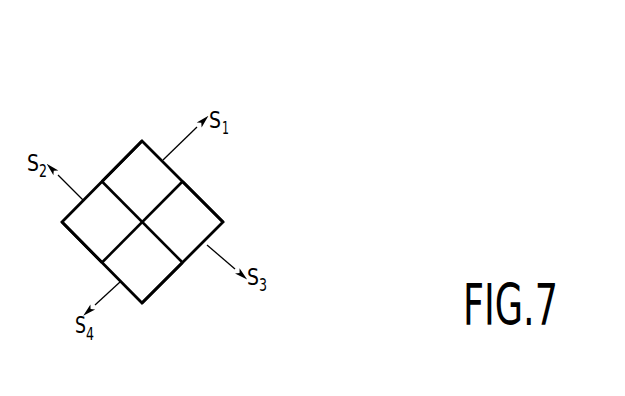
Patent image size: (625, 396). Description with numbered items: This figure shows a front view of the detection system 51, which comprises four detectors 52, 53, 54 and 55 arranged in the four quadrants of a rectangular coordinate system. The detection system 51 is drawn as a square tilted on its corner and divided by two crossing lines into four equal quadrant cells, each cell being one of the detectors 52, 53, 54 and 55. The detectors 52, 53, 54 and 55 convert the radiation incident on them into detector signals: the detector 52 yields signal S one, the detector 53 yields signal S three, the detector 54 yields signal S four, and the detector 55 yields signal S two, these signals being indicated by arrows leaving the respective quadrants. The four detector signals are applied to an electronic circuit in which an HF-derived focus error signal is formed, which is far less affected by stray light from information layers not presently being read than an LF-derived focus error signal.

The detection system 51 is at (158, 98).
The detector 52 is at (121, 160).
The detector 53 is at (204, 203).
The detector 54 is at (166, 282).
The detector 55 is at (78, 240).